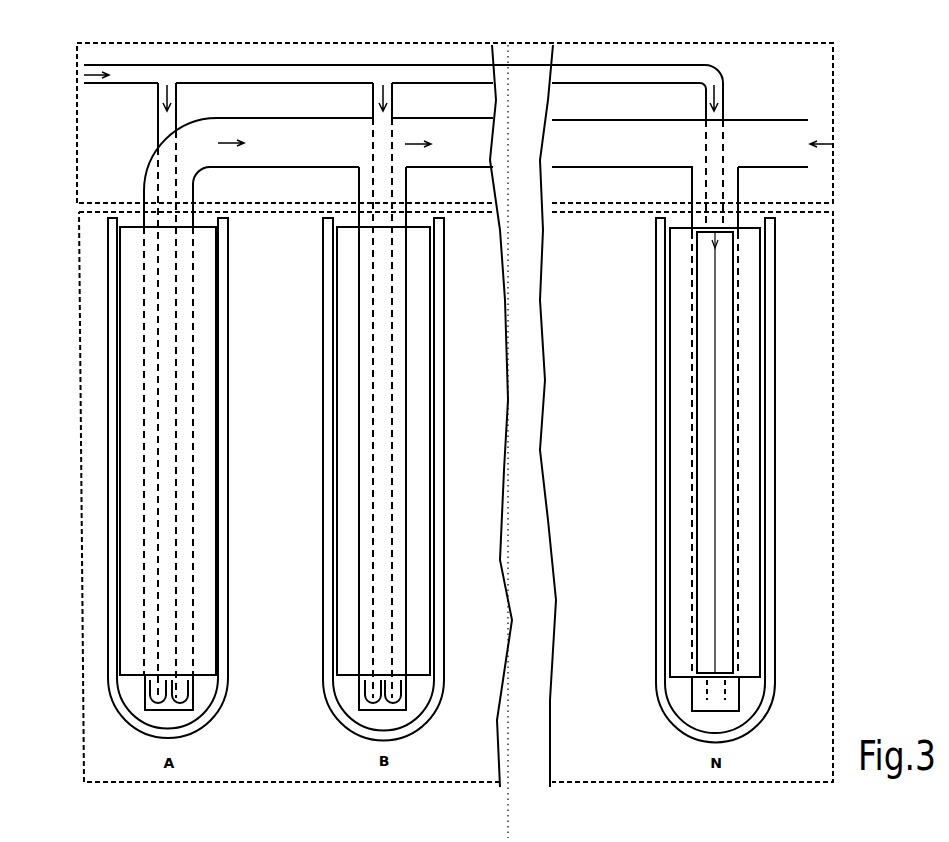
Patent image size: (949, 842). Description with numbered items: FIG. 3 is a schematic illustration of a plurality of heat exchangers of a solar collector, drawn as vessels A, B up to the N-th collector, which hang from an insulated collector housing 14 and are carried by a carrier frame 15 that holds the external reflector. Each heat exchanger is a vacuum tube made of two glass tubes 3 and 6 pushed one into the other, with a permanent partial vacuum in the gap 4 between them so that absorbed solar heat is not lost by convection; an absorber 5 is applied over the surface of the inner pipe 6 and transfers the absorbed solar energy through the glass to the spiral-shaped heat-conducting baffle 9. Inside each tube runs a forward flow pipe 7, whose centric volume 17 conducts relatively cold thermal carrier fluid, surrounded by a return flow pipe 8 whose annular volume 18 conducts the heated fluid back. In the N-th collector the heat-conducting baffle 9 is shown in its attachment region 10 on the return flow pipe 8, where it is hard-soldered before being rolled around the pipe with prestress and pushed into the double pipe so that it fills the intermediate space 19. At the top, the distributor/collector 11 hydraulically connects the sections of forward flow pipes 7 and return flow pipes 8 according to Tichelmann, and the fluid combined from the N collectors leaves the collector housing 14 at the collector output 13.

The glass tube 3 is at (107, 322).
The gap 4 is at (660, 406).
The absorber 5 is at (323, 394).
The glass tube 6 is at (218, 325).
The forward flow pipe 7 is at (128, 86).
The return flow pipe 8 is at (152, 159).
The heat-conducting baffle 9 is at (677, 501).
The attachment region 10 is at (738, 456).
The distributor/collector 11 is at (636, 97).
The collector output 13 is at (802, 146).
The collector housing 14 is at (822, 83).
The carrier frame 15 is at (826, 260).
The centric volume 17 is at (232, 77).
The volume 18 is at (297, 162).
The intermediate space 19 is at (348, 693).